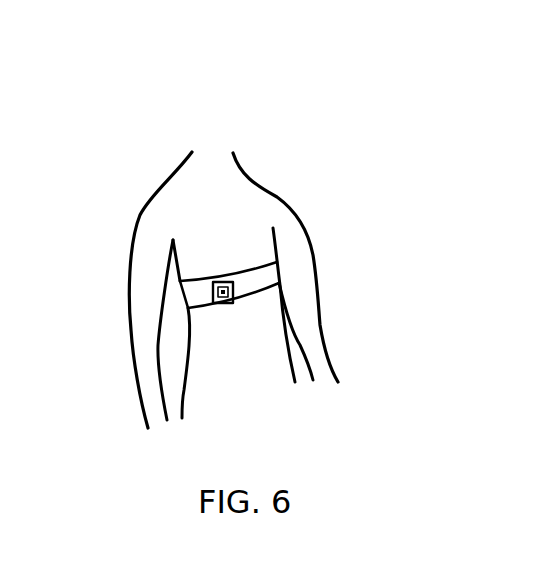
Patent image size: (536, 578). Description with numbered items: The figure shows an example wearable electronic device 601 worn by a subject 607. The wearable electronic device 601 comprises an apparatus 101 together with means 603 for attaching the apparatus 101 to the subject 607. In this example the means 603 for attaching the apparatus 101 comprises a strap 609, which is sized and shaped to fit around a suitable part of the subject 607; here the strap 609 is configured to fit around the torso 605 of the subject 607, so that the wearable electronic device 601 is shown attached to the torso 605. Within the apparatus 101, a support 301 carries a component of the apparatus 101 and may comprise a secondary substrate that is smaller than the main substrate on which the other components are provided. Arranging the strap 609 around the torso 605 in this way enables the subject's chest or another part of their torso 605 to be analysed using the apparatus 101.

The apparatus 101 is at (228, 282).
The support 301 is at (216, 308).
The wearable electronic device 601 is at (202, 280).
The means for attaching 603 is at (273, 287).
The torso 605 is at (192, 263).
The subject 607 is at (253, 197).
The strap 609 is at (278, 277).